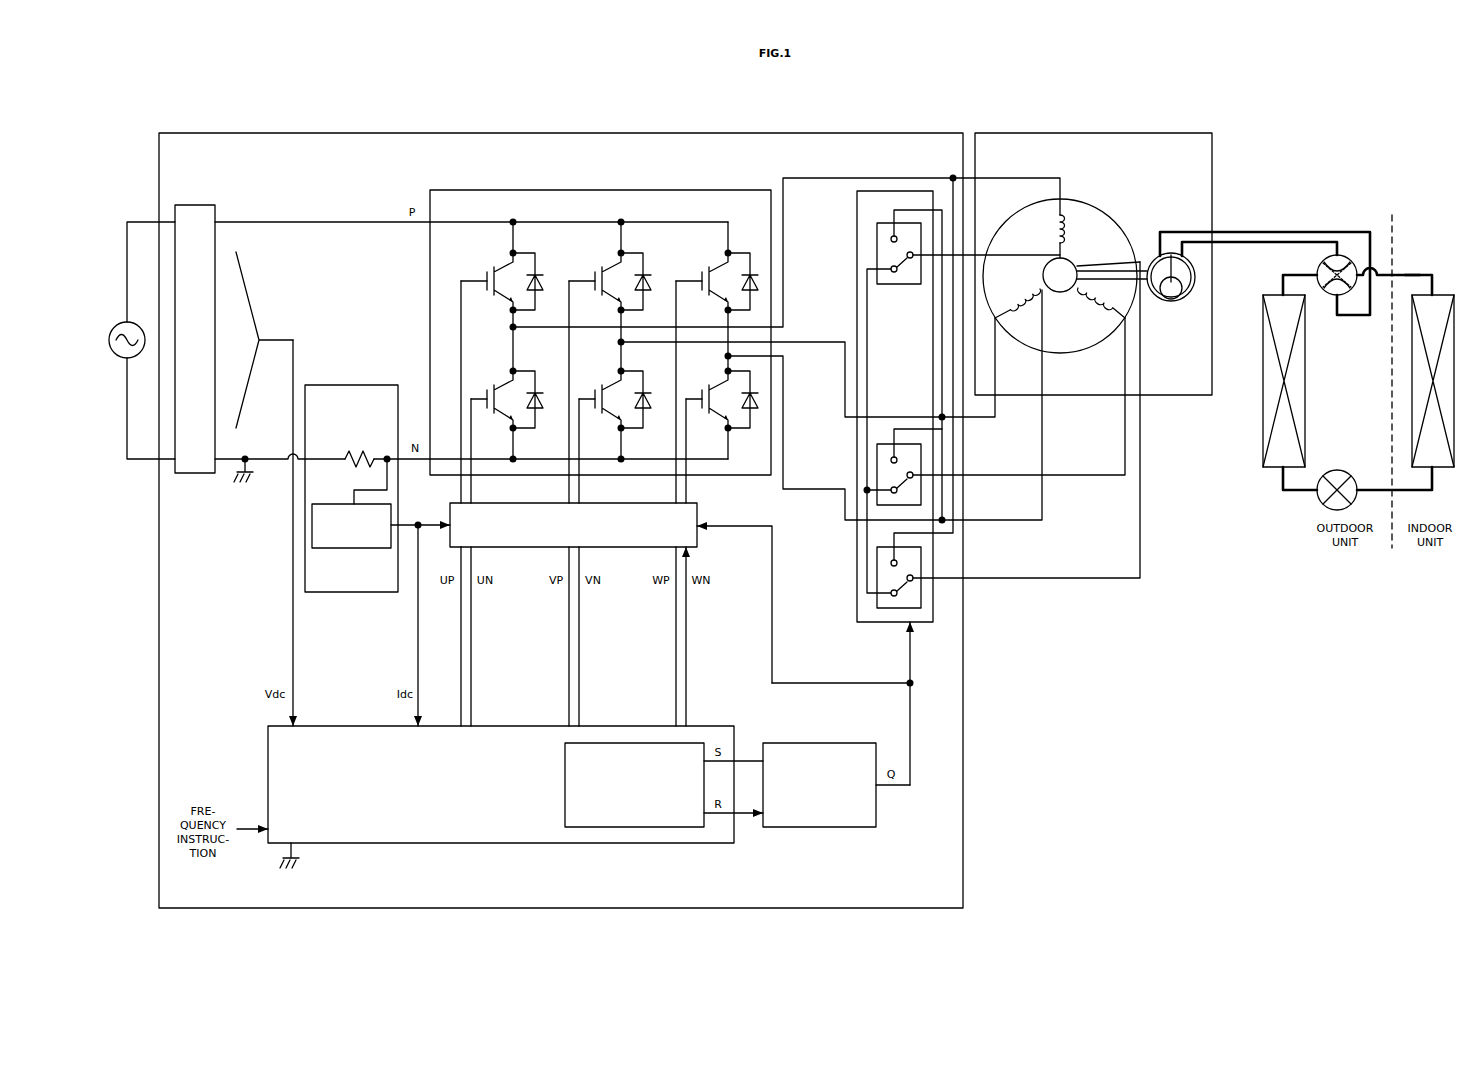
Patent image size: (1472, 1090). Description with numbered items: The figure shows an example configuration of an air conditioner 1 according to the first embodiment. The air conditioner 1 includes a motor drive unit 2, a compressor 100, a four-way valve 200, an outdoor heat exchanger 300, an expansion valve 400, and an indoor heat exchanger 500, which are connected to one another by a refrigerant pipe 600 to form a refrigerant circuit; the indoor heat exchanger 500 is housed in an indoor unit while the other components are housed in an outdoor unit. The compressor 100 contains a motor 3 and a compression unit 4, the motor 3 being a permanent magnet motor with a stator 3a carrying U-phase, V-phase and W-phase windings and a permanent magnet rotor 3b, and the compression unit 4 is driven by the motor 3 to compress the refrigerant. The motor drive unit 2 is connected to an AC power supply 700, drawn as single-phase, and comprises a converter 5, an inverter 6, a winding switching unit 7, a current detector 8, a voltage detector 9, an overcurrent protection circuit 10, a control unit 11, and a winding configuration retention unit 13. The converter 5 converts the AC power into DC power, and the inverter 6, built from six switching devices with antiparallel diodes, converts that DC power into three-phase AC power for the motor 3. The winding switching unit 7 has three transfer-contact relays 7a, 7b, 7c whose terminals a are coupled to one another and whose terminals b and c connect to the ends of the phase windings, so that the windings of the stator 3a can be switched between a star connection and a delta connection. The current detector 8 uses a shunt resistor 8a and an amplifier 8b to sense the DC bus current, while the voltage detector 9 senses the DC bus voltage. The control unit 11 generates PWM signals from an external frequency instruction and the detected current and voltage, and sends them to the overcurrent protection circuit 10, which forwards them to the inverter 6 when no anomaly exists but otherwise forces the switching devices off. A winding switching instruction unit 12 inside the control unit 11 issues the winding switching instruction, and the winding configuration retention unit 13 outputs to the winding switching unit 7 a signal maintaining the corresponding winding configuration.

The air conditioner 1 is at (1013, 107).
The motor drive unit 2 is at (893, 133).
The motor 3 is at (1078, 200).
The stator 3a is at (1054, 230).
The permanent magnet rotor 3b is at (1072, 262).
The compression unit 4 is at (1171, 301).
The converter 5 is at (190, 205).
The inverter 6 is at (678, 190).
The winding switching unit 7 is at (857, 594).
The relay 7a is at (877, 238).
The relay 7b is at (877, 458).
The relay 7c is at (877, 562).
The current detector 8 is at (363, 385).
The shunt resistor 8a is at (356, 451).
The amplifier 8b is at (354, 548).
The voltage detector 9 is at (251, 305).
The overcurrent protection circuit 10 is at (606, 503).
The control unit 11 is at (268, 768).
The winding switching instruction unit 12 is at (565, 806).
The winding configuration retention unit 13 is at (827, 743).
The compressor 100 is at (1150, 133).
The four-way valve 200 is at (1337, 255).
The outdoor heat exchanger 300 is at (1263, 429).
The expansion valve 400 is at (1347, 470).
The indoor heat exchanger 500 is at (1412, 380).
The refrigerant pipe 600 is at (1411, 275).
The AC power supply 700 is at (117, 326).